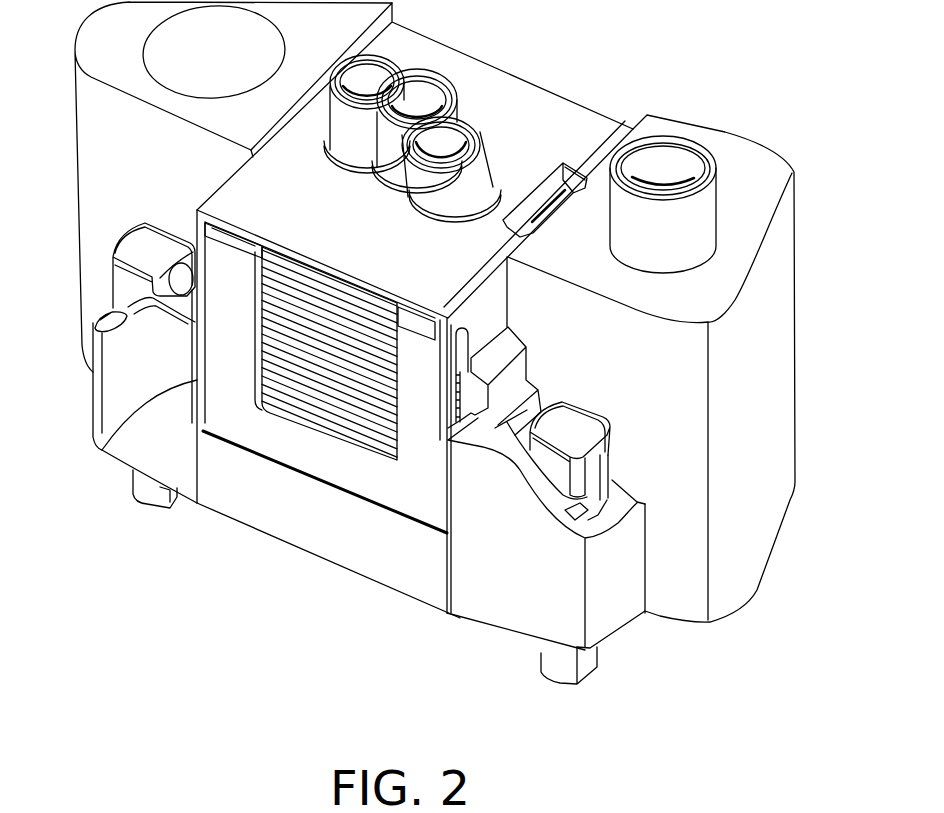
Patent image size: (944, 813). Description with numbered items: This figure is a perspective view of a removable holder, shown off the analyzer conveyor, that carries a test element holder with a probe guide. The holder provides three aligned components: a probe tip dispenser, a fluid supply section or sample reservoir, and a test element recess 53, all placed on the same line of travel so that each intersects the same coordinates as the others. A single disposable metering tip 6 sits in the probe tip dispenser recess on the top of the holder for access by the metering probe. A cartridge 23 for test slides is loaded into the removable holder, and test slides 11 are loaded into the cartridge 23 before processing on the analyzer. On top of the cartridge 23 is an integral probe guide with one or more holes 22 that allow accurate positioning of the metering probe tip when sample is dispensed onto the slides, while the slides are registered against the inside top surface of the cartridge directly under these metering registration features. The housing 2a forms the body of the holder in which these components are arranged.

The housing 2a is at (728, 281).
The disposable metering tip 6 is at (703, 208).
The test slides 11 is at (330, 402).
The holes 22 is at (417, 110).
The cartridge 23 is at (420, 500).
The test element recess 53 is at (102, 450).